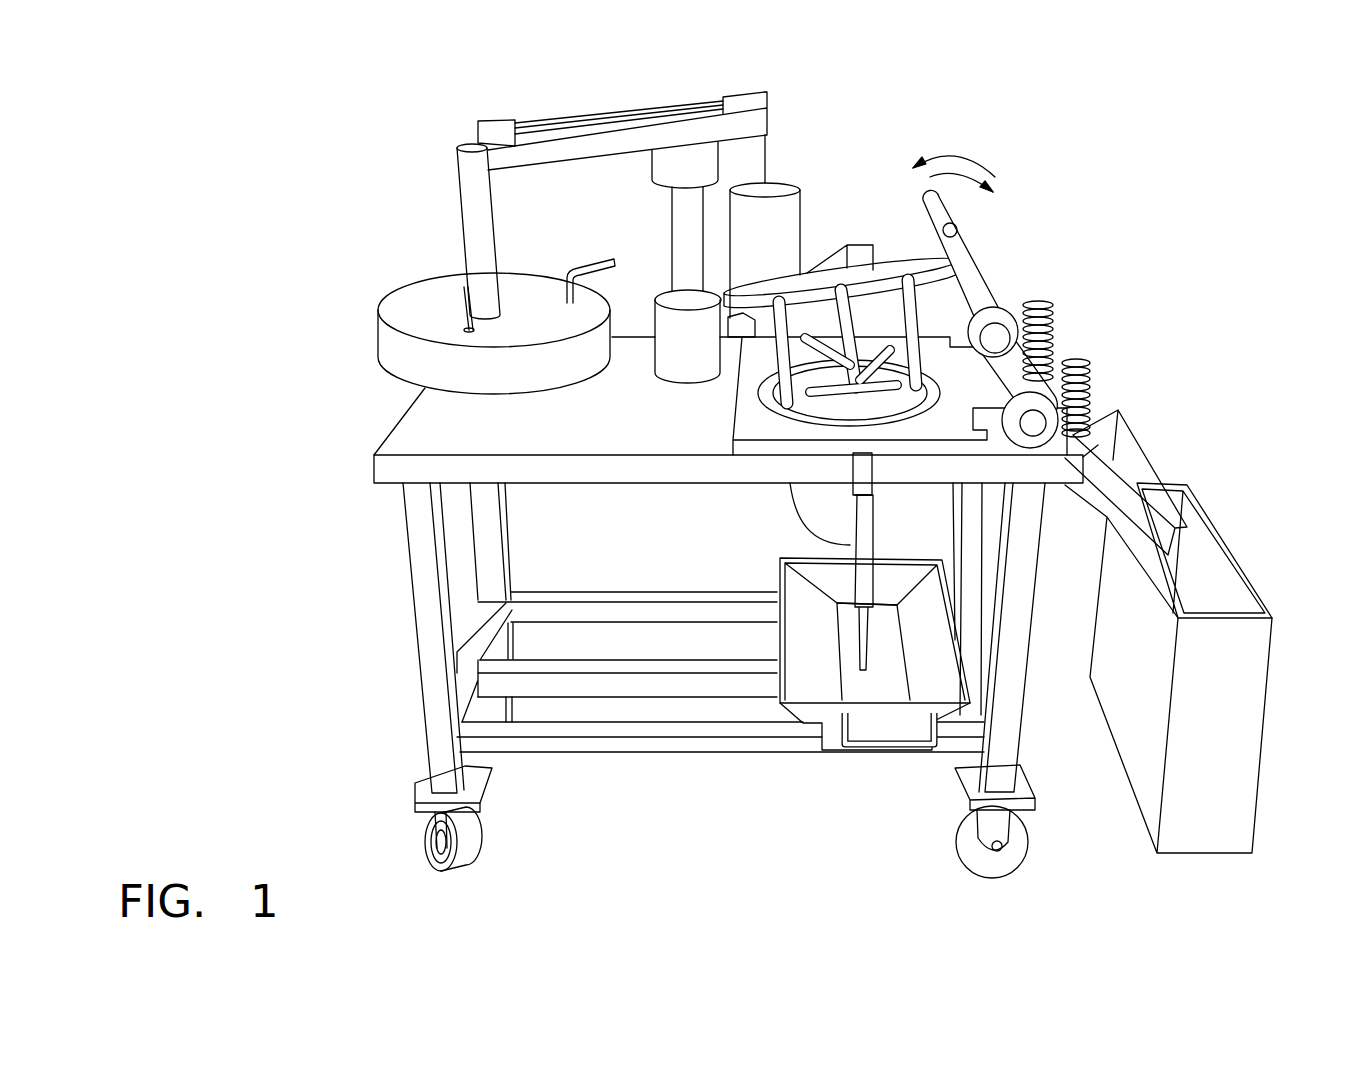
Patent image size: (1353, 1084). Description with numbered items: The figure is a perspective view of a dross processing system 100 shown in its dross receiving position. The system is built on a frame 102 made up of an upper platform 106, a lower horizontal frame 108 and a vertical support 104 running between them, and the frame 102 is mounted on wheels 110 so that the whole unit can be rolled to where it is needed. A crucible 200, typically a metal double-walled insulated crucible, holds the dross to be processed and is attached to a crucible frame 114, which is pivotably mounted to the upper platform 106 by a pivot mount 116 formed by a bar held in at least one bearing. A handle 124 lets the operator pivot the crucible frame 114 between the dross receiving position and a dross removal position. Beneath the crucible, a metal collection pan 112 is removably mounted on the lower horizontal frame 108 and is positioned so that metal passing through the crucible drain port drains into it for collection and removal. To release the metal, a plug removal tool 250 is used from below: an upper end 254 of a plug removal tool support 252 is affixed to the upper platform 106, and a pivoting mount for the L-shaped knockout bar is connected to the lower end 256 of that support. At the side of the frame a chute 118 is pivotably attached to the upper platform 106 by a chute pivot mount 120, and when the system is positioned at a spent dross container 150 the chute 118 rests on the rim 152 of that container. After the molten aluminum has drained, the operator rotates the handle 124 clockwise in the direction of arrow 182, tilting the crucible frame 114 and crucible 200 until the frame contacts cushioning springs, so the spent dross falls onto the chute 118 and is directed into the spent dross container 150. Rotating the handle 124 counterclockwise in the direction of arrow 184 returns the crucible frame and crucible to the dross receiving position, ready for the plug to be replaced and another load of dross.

The dross processing system 100 is at (282, 185).
The frame 102 is at (400, 520).
The vertical support 104 is at (432, 632).
The upper platform 106 is at (533, 470).
The lower horizontal frame 108 is at (634, 742).
The wheels 110 is at (470, 845).
The metal collection pan 112 is at (807, 617).
The crucible frame 114 is at (982, 319).
The pivot mount 116 is at (997, 390).
The chute 118 is at (1112, 473).
The chute pivot mount 120 is at (1064, 393).
The handle 124 is at (923, 202).
The spent dross container 150 is at (1187, 668).
The rim 152 is at (1212, 610).
The arrow 182 is at (960, 182).
The arrow 184 is at (967, 160).
The crucible 200 is at (842, 561).
The plug removal tool 250 is at (850, 552).
The plug removal tool support 252 is at (873, 545).
The upper end 254 is at (850, 476).
The lower end 256 is at (832, 600).